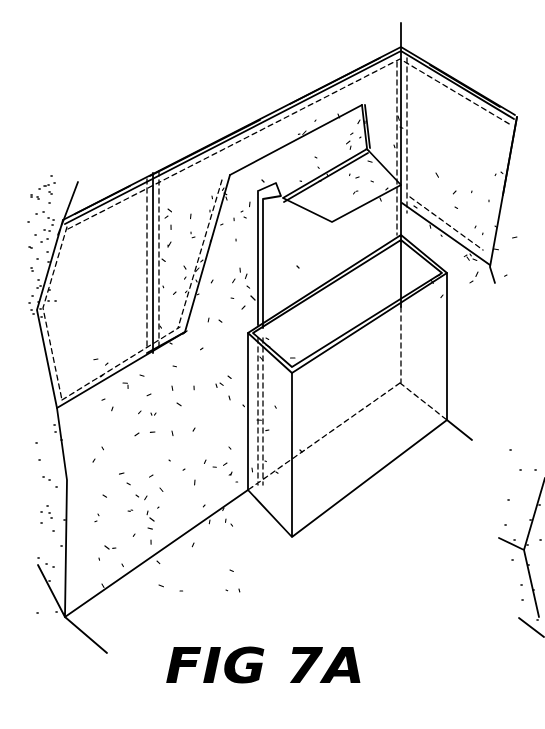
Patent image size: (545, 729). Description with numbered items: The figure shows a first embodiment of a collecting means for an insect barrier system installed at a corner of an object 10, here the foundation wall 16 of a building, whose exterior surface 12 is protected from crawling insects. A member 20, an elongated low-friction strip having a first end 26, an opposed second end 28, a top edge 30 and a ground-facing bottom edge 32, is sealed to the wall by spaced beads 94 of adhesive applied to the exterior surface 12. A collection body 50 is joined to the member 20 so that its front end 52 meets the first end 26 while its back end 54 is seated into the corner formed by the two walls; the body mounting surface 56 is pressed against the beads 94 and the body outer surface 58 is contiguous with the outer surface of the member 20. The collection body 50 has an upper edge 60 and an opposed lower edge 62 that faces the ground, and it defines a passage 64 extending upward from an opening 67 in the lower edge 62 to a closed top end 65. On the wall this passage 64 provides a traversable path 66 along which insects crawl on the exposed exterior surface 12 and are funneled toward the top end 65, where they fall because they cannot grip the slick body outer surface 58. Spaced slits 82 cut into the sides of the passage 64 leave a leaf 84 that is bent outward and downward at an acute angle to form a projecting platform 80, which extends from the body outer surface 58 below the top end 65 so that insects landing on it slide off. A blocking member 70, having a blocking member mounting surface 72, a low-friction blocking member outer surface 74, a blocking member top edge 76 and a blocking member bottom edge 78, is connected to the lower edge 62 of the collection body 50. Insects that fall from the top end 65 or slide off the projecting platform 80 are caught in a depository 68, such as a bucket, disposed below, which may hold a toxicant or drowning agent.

The object 10 is at (190, 497).
The exterior surface 12 is at (153, 520).
The foundation wall 16 is at (107, 548).
The member 20 is at (90, 228).
The first end 26 is at (150, 282).
The second end 28 is at (410, 130).
The top edge 30 is at (107, 197).
The bottom edge 32 is at (110, 380).
The collection body 50 is at (173, 182).
The front end 52 is at (145, 212).
The back end 54 is at (403, 88).
The body mounting surface 56 is at (200, 150).
The body outer surface 58 is at (193, 278).
The upper edge 60 is at (327, 84).
The lower edge 62 is at (170, 343).
The passage 64 is at (325, 127).
The top end 65 is at (368, 110).
The traversable path 66 is at (263, 182).
The opening 67 is at (185, 333).
The depository 68 is at (390, 430).
The blocking member 70 is at (415, 207).
The blocking member mounting surface 72 is at (253, 298).
The blocking member outer surface 74 is at (443, 233).
The blocking member top edge 76 is at (405, 258).
The blocking member bottom edge 78 is at (305, 448).
The projecting platform 80 is at (357, 178).
The slits 82 is at (368, 150).
The leaf 84 is at (367, 192).
The beads of adhesive 94 is at (62, 232).